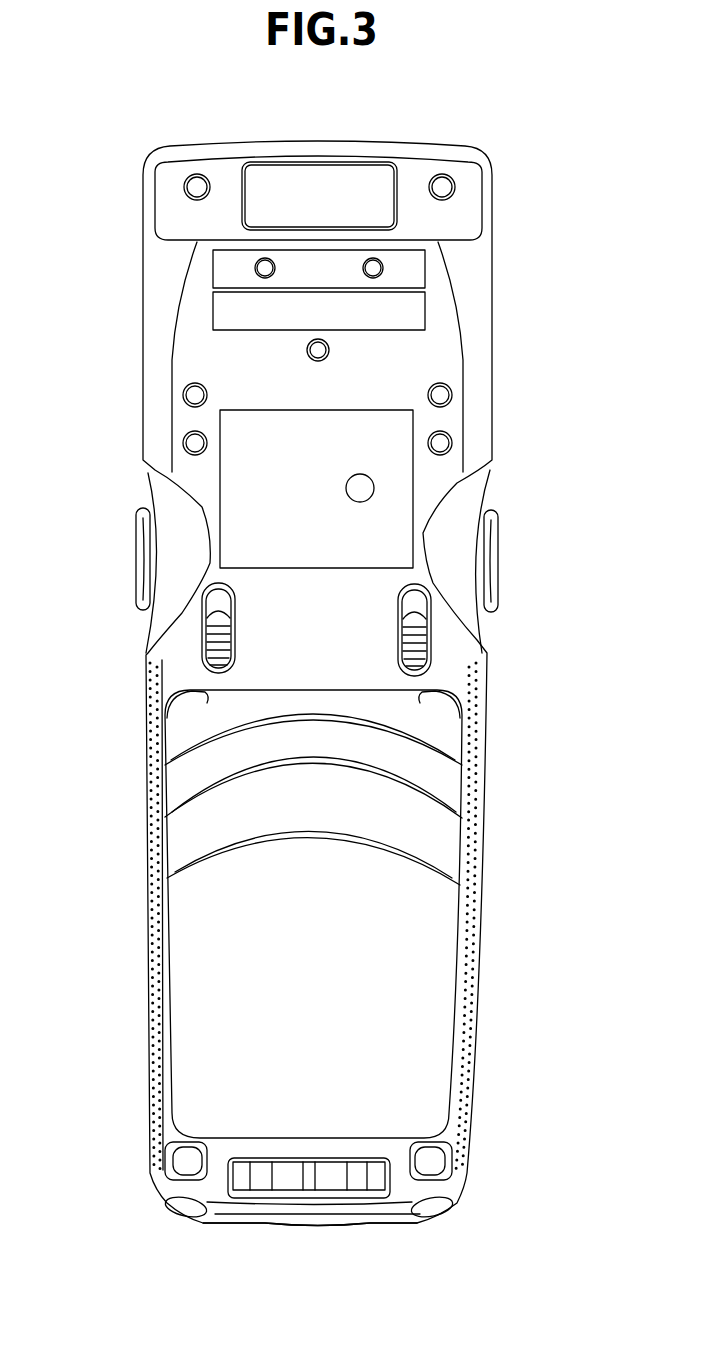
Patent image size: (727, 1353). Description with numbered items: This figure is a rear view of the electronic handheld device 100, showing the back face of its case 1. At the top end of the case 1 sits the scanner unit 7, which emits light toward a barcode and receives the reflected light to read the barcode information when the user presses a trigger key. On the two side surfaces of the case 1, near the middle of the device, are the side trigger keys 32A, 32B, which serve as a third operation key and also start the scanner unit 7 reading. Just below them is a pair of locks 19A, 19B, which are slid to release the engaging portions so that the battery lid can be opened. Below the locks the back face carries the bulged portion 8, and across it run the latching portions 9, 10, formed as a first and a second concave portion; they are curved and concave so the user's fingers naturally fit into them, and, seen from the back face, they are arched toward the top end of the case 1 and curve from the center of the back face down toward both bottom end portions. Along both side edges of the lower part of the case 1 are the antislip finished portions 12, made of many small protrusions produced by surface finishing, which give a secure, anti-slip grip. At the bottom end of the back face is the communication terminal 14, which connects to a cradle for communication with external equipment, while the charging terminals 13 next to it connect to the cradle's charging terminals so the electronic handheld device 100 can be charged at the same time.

The electronic handheld device 100 is at (497, 119).
The case 1 is at (492, 270).
The scanner unit 7 is at (276, 181).
The side trigger key 32A is at (140, 546).
The side trigger key 32B is at (493, 547).
The lock 19A is at (203, 628).
The lock 19B is at (426, 637).
The bulged portion 8 is at (362, 1068).
The latching portion 9 is at (323, 705).
The latching portion 10 is at (320, 822).
The antislip finished portion 12 is at (460, 970).
The charging terminals 13 is at (377, 1223).
The communication terminal 14 is at (357, 1178).